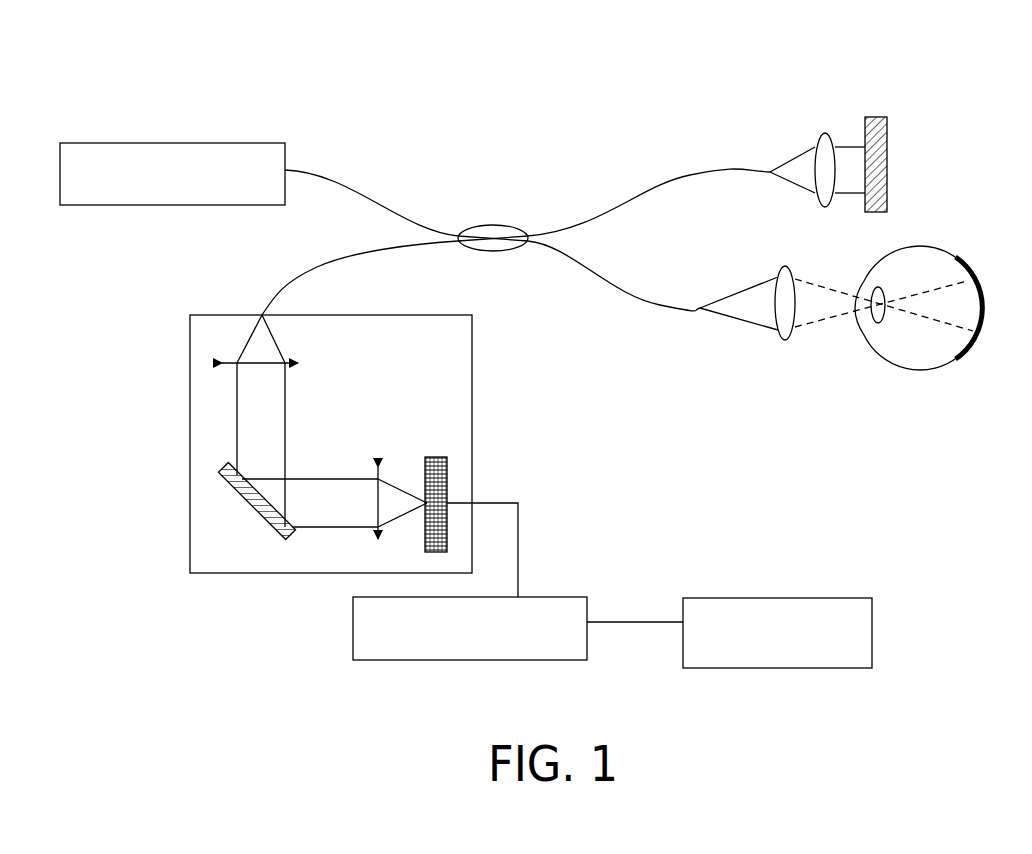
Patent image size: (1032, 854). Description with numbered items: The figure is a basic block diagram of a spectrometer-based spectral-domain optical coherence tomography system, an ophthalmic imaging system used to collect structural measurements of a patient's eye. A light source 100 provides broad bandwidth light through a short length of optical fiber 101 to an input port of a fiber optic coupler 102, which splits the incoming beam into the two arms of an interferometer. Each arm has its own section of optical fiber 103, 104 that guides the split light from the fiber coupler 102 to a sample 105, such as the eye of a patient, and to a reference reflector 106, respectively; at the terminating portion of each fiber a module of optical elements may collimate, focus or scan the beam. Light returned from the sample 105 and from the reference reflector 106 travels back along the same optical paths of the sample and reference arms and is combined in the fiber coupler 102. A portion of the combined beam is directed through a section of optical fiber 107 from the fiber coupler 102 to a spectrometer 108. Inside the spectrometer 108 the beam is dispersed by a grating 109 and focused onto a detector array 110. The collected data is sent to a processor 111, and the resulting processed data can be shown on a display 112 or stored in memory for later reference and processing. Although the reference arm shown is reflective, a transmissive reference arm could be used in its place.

The light source 100 is at (168, 143).
The optical fiber 101 is at (363, 177).
The fiber optic coupler 102 is at (488, 213).
The optical fiber 103 is at (625, 310).
The optical fiber 104 is at (650, 182).
The sample 105 is at (937, 385).
The reference reflector 106 is at (873, 103).
The optical fiber 107 is at (307, 270).
The spectrometer 108 is at (190, 415).
The grating 109 is at (238, 502).
The detector array 110 is at (427, 455).
The processor 111 is at (477, 667).
The display 112 is at (778, 597).